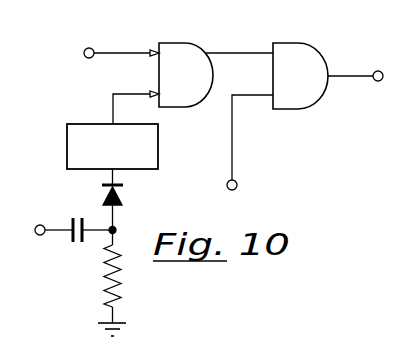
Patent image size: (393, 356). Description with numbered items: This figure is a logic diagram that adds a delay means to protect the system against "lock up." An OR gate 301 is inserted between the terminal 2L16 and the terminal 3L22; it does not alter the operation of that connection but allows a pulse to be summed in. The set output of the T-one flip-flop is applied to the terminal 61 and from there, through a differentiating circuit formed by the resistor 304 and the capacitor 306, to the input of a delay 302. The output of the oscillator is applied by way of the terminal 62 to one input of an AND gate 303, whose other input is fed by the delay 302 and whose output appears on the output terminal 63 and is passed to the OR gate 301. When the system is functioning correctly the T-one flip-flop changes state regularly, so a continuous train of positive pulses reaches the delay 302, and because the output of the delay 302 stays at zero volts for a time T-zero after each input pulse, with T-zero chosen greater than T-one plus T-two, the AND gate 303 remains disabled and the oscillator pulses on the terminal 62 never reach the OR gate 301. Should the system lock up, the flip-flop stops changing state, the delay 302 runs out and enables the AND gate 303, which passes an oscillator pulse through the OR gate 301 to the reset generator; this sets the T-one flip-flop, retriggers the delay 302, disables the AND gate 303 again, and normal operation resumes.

The terminal 62 is at (84, 52).
The AND gate 303 is at (203, 47).
The OR gate 301 is at (316, 47).
The terminal 22 of FIGURE 3 3L22 is at (363, 64).
The output terminal 63 is at (373, 81).
The terminal 16 of FIGURE 2 2L16 is at (232, 149).
The delay 302 is at (158, 128).
The capacitor 306 is at (74, 219).
The terminal 61 is at (44, 235).
The resistor 304 is at (107, 288).